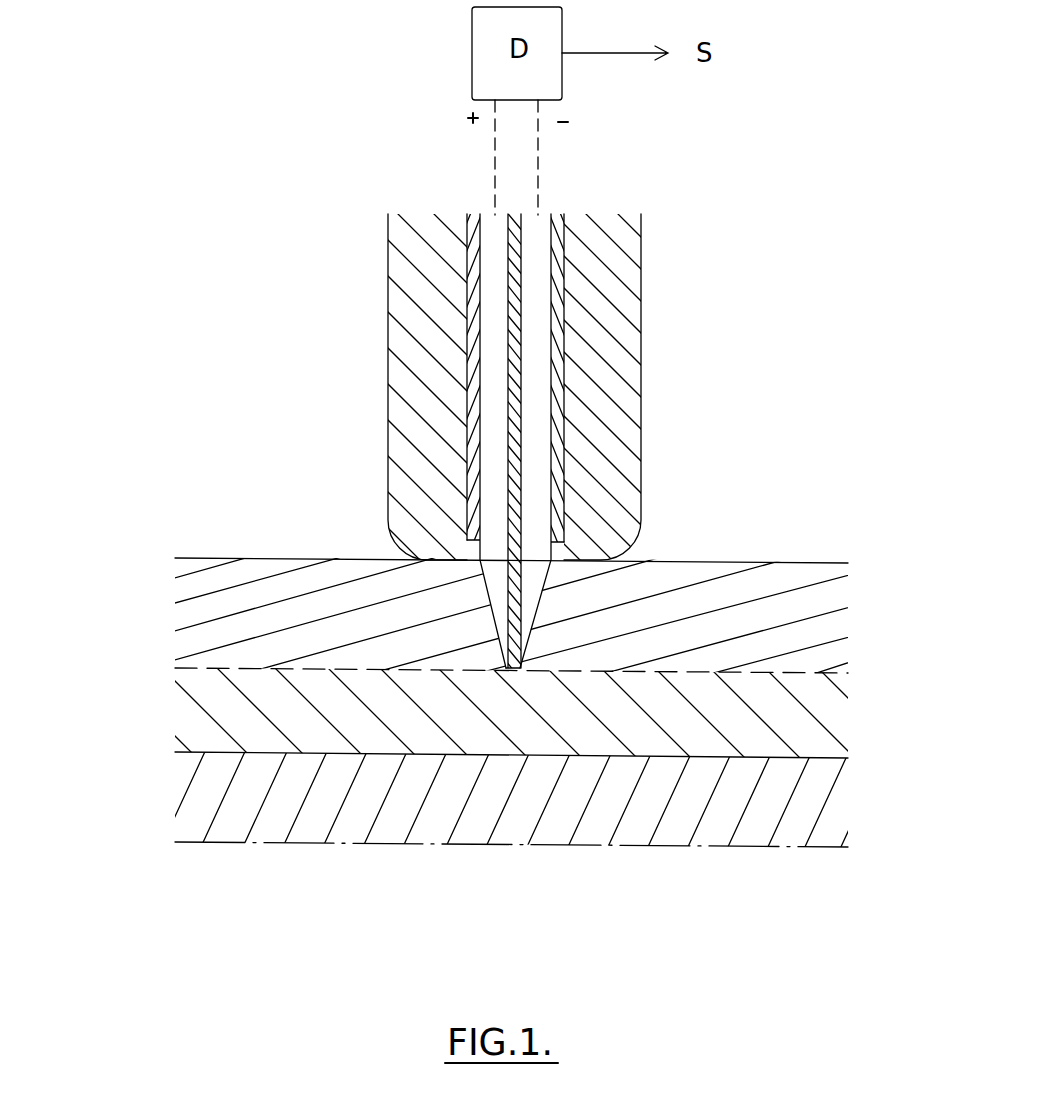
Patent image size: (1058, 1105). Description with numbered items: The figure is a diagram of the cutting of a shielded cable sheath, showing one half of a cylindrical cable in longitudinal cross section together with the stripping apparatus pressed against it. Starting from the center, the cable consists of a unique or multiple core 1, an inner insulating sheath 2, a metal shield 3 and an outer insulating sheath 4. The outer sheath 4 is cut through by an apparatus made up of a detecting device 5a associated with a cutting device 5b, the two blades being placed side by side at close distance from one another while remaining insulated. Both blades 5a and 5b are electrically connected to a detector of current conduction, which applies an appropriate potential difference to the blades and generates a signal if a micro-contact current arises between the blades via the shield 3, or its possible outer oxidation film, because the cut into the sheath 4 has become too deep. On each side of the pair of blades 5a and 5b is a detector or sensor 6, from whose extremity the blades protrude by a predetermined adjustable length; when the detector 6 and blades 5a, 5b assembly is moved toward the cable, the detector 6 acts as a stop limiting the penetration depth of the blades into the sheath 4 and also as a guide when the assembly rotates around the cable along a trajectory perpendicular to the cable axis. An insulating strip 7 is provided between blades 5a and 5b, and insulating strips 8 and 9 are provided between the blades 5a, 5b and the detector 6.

The core 1 is at (159, 800).
The inner insulating sheath 2 is at (156, 720).
The metal shield 3 is at (156, 660).
The outer insulating sheath 4 is at (156, 574).
The detecting device 5a is at (494, 617).
The cutting device 5b is at (535, 607).
The detector 6 is at (412, 352).
The insulating strip 7 is at (508, 282).
The insulating strip 8 is at (467, 303).
The insulating strip 9 is at (562, 287).